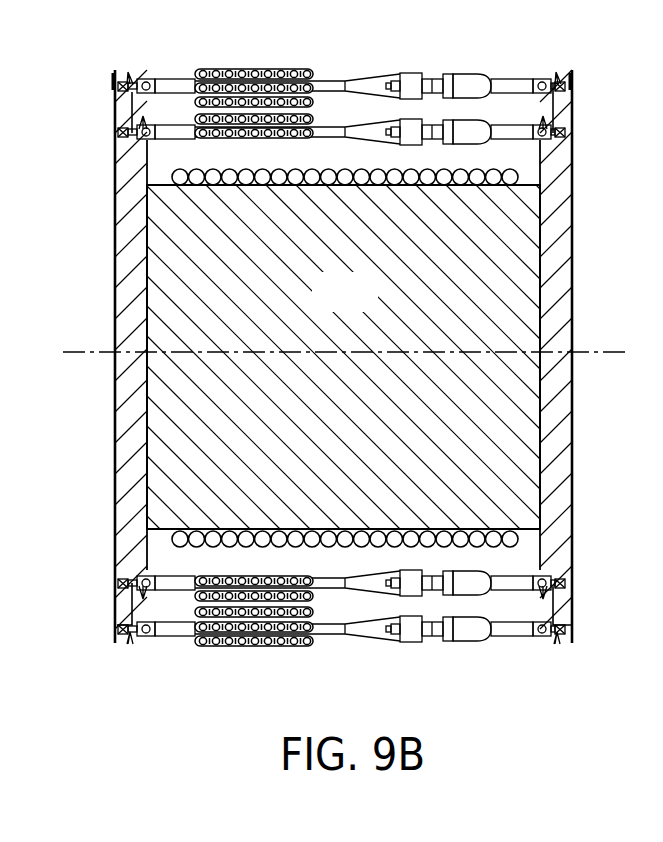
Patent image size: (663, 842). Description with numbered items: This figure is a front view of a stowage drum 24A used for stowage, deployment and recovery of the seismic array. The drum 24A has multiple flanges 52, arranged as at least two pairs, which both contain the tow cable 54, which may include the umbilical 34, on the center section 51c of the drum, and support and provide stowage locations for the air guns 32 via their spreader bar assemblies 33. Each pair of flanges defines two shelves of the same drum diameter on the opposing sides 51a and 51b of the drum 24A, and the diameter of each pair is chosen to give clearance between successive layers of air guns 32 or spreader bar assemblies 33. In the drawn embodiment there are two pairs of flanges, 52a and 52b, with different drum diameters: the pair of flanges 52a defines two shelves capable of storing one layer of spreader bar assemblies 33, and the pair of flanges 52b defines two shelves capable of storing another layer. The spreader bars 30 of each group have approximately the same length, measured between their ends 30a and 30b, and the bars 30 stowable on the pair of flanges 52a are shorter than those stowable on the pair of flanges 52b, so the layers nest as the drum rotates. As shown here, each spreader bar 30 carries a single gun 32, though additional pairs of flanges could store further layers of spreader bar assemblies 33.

The spreader bar 30 is at (340, 53).
The end of spreader bar 30a is at (124, 0).
The end of spreader bar 30b is at (559, 0).
The air gun 32 is at (433, 0).
The spreader bar assembly 33 is at (372, 52).
The umbilical 34 is at (285, 70).
The side of drum 51a is at (116, 290).
The side of drum 51b is at (574, 302).
The center section of drum 51c is at (370, 307).
The flanges 52 is at (337, 344).
The pair of flanges 52a is at (133, 140).
The pair of flanges 52b is at (114, 84).
The tow cable 54 is at (181, 187).
The stowage drum 24A is at (574, 415).